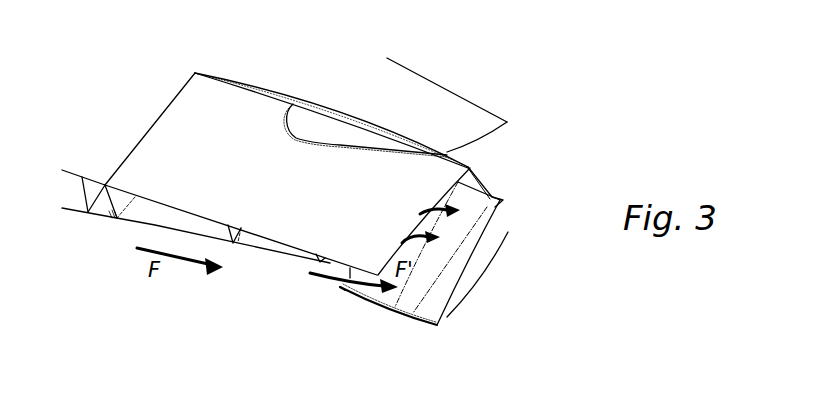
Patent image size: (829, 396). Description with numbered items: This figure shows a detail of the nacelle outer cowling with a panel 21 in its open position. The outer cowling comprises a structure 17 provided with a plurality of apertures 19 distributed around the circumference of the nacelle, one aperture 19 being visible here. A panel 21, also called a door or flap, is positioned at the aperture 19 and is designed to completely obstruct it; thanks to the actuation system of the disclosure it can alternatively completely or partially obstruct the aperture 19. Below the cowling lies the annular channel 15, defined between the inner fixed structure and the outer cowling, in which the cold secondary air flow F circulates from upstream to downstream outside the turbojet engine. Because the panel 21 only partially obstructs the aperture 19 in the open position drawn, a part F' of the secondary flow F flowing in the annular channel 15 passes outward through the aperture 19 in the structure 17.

The annular channel 15 is at (260, 277).
The structure 17 is at (450, 110).
The aperture 19 is at (323, 290).
The panel 21 is at (238, 102).